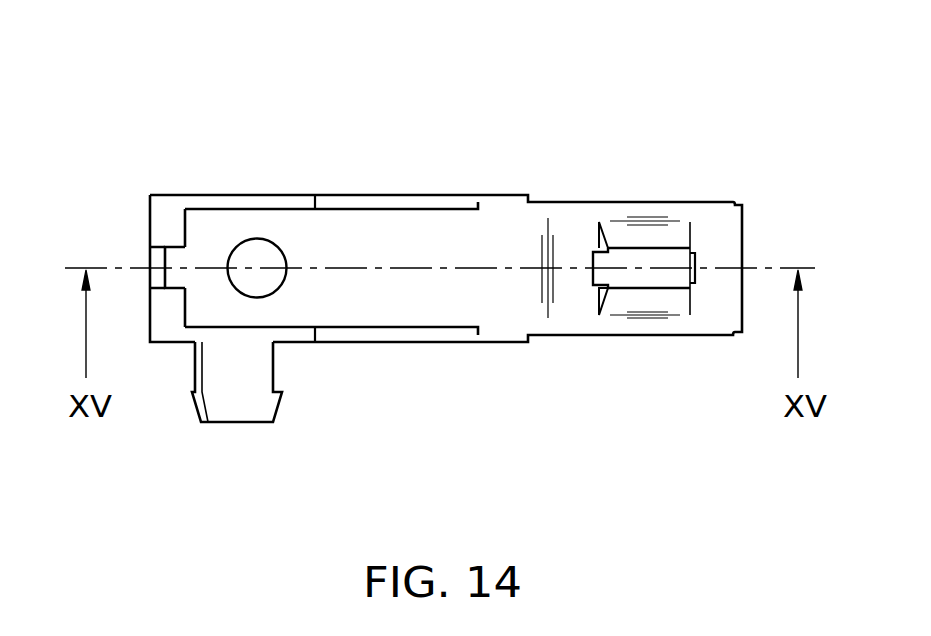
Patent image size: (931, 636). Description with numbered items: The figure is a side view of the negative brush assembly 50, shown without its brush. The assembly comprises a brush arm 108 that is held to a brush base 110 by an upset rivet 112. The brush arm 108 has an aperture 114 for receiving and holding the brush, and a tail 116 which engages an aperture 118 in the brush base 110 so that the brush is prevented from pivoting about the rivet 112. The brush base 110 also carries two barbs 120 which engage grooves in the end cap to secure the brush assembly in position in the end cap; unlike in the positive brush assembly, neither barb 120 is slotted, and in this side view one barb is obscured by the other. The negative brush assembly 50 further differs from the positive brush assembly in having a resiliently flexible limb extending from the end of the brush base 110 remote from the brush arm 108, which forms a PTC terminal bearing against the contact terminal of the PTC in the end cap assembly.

The negative brush assembly 50 is at (430, 262).
The brush arm 108 is at (398, 238).
The brush base 110 is at (172, 208).
The upset rivet 112 is at (257, 253).
The aperture 114 is at (640, 260).
The tail 116 is at (175, 277).
The aperture 118 is at (160, 250).
The barbs 120 is at (197, 368).